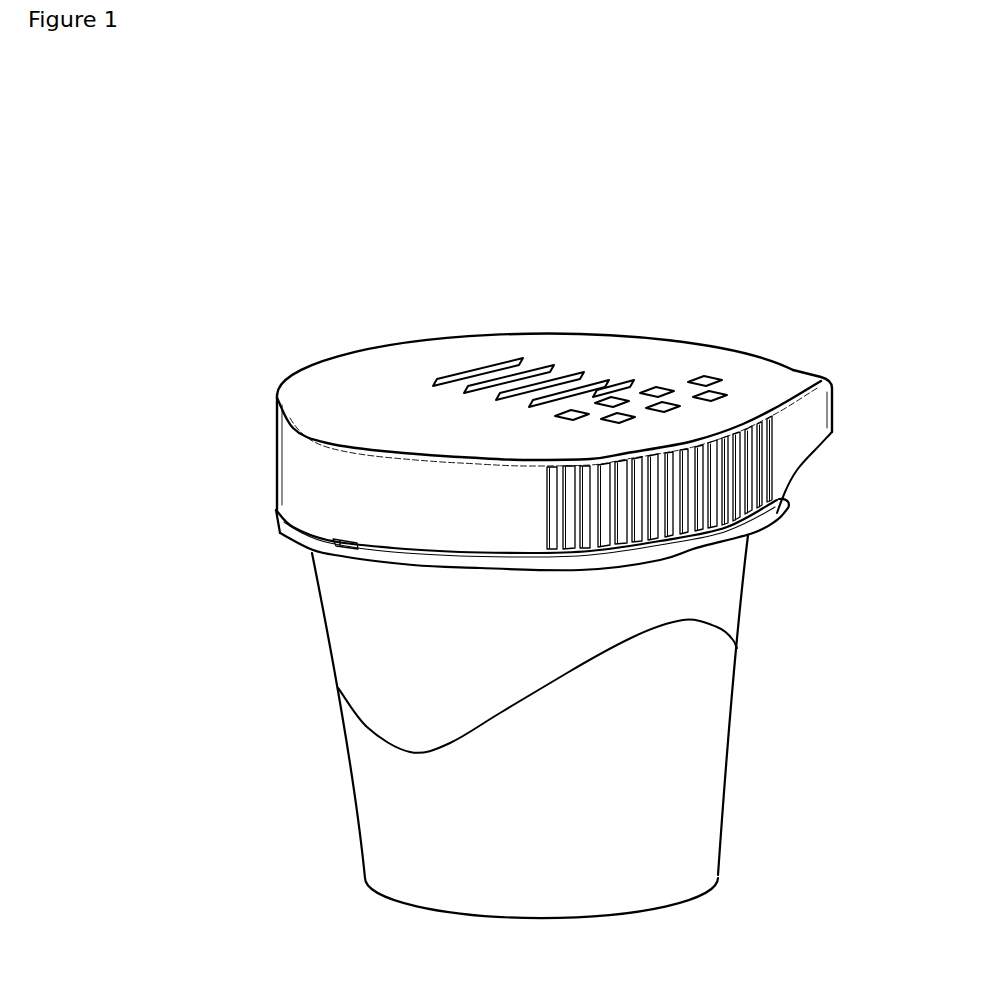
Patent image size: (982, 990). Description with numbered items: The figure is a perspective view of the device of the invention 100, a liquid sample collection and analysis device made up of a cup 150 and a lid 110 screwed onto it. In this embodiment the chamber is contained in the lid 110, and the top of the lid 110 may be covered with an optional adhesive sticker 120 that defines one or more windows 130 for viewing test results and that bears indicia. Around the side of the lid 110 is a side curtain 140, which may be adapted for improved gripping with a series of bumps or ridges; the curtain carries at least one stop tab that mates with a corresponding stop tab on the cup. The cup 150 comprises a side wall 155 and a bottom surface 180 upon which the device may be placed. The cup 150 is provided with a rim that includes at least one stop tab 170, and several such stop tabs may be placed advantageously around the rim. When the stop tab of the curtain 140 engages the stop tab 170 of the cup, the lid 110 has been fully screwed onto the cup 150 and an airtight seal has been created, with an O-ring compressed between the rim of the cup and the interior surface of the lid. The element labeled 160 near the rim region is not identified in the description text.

The device of the invention 100 is at (737, 224).
The lid 110 is at (810, 420).
The adhesive sticker 120 is at (335, 397).
The windows 130 is at (465, 372).
The side curtain 140 is at (710, 507).
The cup 150 is at (640, 730).
The side wall 155 is at (722, 822).
The collar ring 160 is at (293, 533).
The stop tab 170 is at (360, 542).
The bottom surface 180 is at (682, 900).